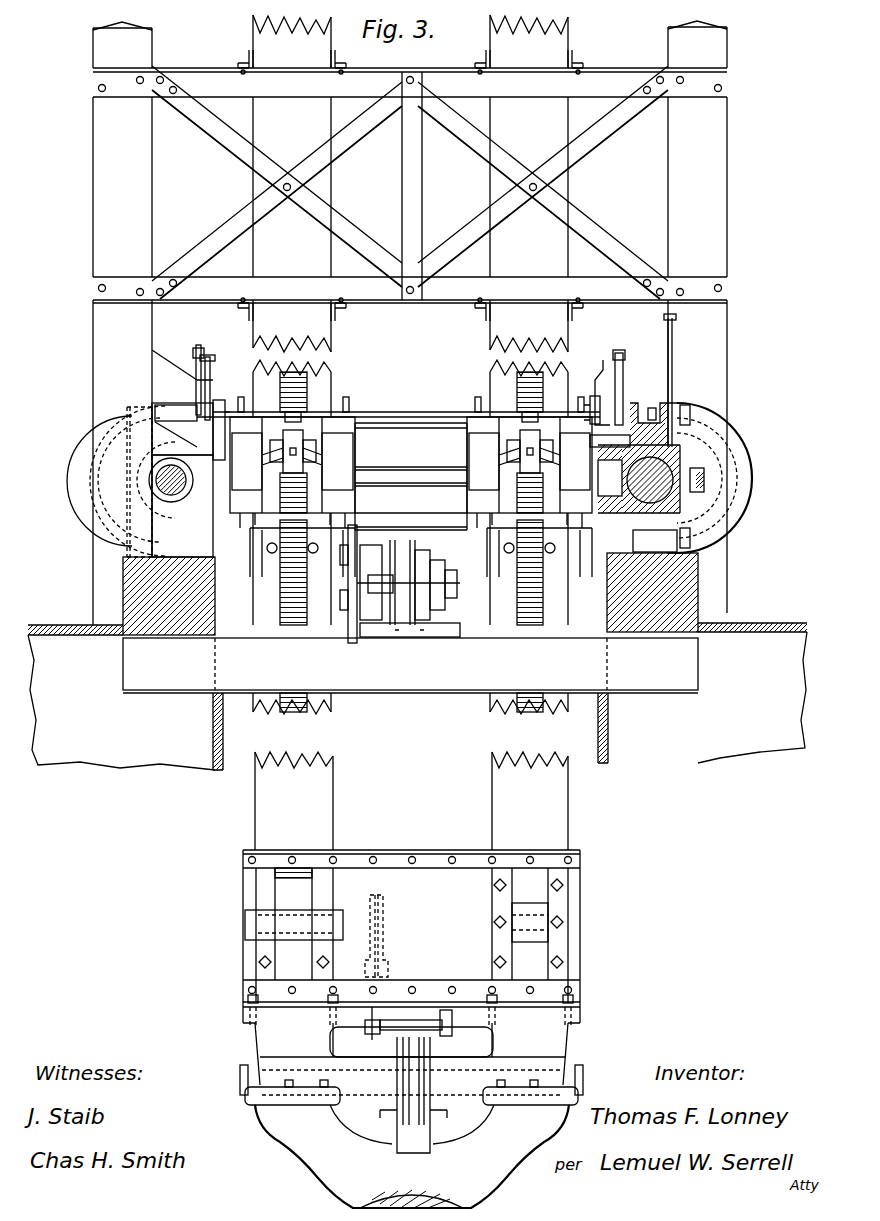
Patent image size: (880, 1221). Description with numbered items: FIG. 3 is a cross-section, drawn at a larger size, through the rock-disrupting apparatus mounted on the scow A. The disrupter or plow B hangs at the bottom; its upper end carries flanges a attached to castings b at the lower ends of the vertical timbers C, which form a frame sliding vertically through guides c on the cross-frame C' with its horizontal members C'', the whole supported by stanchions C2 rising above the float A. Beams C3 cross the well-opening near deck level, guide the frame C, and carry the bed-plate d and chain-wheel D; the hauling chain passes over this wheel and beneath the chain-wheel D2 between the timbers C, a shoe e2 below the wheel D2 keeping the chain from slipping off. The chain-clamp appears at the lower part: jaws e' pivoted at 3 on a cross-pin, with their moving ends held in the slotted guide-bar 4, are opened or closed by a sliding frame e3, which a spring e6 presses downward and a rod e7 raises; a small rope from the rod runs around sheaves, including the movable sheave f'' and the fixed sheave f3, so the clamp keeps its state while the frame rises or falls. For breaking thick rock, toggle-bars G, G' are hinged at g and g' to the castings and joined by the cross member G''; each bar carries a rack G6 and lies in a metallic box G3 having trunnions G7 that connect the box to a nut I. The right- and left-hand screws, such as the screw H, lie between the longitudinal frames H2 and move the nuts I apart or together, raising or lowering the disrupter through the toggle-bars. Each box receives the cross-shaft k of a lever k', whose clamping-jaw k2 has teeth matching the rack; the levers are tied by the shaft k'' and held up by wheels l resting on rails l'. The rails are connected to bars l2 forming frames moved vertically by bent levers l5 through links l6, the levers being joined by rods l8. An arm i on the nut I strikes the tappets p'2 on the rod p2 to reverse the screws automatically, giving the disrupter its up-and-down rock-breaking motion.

The scow A is at (748, 612).
The disrupter B is at (412, 1156).
The vertical timbers C is at (410, 432).
The cross-frame C' is at (410, 183).
The horizontal beams C'' is at (410, 185).
The stanchions C2 is at (410, 323).
The beams C3 is at (410, 665).
The guides c is at (246, 62).
The chain-wheel D is at (410, 560).
The chain-wheel D2 is at (430, 1050).
The bed-plate d is at (378, 640).
The toggle-bar G is at (400, 534).
The toggle-bar G' is at (411, 937).
The cross beam G'' is at (411, 476).
The metallic box G3 is at (248, 540).
The rack G6 is at (293, 378).
The trunnions G7 is at (610, 478).
The screw H is at (692, 396).
The longitudinal frame H2 is at (413, 506).
The nut I is at (712, 440).
The flanges a is at (278, 1100).
The castings b is at (411, 1059).
The jaws e' is at (411, 996).
The shoe e2 is at (413, 1095).
The metal frame e3 is at (360, 1023).
The spring e6 is at (454, 1019).
The rod e7 is at (391, 936).
The sheave f'' is at (333, 656).
The sheave f3 is at (362, 528).
The hinge g is at (294, 908).
The bearing g' is at (507, 927).
The arm i is at (738, 502).
The cross-shaft k is at (435, 460).
The lever k' is at (411, 442).
The shaft k'' is at (406, 400).
The clamping-jaw k2 is at (411, 472).
The wheels l is at (411, 384).
The rails l' is at (421, 430).
The bars l2 is at (620, 340).
The bent levers l5 is at (155, 365).
The links l6 is at (196, 360).
The rods l8 is at (196, 344).
The rod p2 is at (738, 488).
The tappets p'2 is at (758, 462).
The pivot 3 is at (456, 1044).
The slotted guide-bar 4 is at (385, 1040).